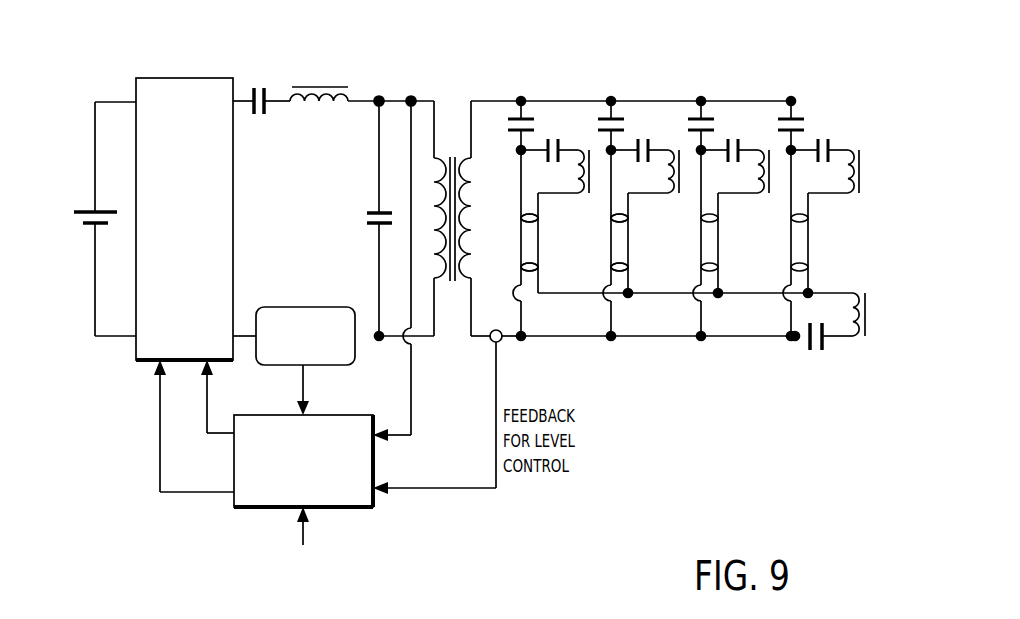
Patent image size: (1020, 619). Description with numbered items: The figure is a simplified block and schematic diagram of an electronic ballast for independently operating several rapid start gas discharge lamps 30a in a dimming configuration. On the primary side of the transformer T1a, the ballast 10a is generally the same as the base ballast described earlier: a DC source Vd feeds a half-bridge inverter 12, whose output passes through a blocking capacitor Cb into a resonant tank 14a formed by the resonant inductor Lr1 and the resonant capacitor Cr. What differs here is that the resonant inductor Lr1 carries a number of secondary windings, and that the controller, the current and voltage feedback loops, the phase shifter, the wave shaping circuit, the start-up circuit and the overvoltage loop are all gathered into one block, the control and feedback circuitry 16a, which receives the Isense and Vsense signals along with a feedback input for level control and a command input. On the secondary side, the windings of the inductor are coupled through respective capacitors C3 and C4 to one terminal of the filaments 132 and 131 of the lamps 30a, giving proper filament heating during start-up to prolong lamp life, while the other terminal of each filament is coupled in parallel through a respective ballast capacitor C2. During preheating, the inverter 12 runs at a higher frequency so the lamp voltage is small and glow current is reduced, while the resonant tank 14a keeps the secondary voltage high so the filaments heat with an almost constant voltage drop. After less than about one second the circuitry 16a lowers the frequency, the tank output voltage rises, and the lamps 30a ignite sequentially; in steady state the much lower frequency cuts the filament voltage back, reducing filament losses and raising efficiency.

The half-bridge inverter 12 is at (154, 89).
The resonant tank 14a is at (377, 89).
The ballast 10a is at (666, 212).
The filament 132 is at (521, 219).
The filament 131 is at (521, 271).
The rapid start lamps 30a is at (539, 252).
The control and feedback circuitry 16a is at (375, 510).
The DC supply voltage Vd is at (98, 219).
The blocking capacitor Cb is at (261, 118).
The resonant inductor Lr1 is at (362, 109).
The resonant capacitor Cr is at (364, 221).
The transformer T1a is at (434, 209).
The ballast capacitor C2 is at (489, 119).
The capacitor C3 is at (565, 119).
The capacitor C4 is at (822, 351).
The current sensing Isense is at (298, 384).
The voltage sense signal Vsense is at (413, 380).